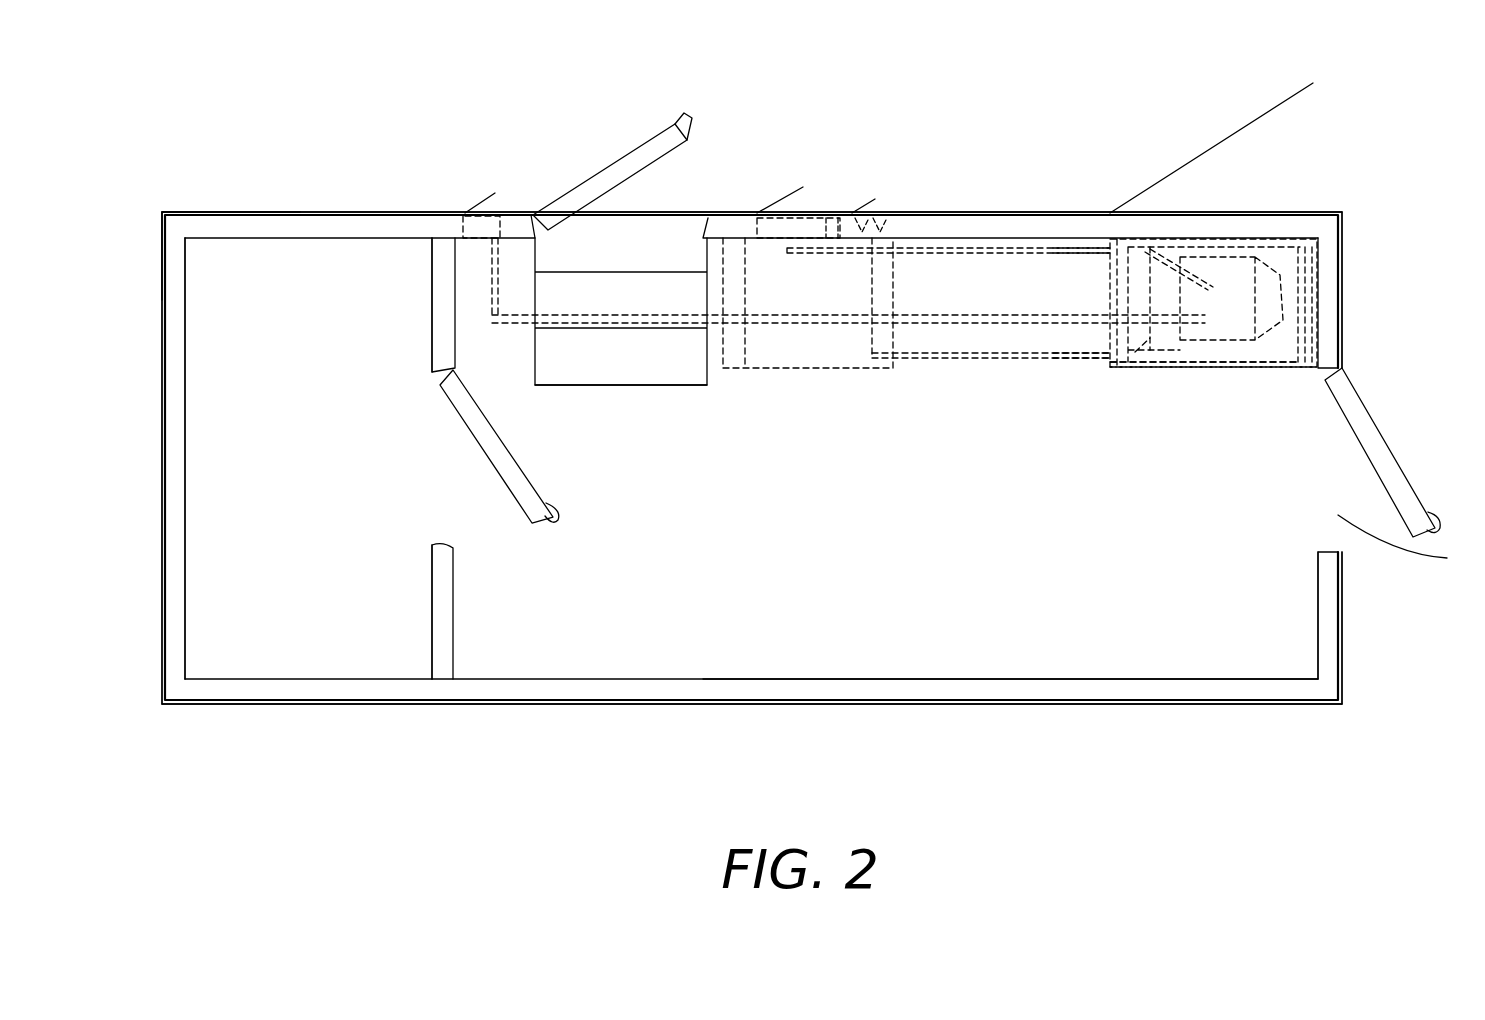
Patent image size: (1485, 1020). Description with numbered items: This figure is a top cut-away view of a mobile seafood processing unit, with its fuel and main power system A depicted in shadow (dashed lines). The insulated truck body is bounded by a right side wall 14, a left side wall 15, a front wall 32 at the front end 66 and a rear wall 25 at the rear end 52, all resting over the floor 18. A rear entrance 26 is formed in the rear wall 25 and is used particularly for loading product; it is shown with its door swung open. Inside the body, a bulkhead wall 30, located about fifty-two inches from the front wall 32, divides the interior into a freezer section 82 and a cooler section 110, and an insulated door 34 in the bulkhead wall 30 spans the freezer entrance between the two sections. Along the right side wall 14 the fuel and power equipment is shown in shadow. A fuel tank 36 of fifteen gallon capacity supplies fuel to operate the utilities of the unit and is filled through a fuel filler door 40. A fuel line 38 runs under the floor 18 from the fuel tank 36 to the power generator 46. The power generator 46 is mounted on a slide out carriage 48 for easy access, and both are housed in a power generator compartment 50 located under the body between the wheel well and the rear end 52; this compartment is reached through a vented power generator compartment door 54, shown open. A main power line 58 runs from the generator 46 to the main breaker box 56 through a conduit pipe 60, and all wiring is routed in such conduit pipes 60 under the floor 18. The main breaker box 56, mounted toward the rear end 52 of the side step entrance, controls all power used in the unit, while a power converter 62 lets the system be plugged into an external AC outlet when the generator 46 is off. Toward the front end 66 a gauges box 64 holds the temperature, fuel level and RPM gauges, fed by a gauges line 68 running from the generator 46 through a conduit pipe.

The right side wall 14 is at (1036, 226).
The left side wall 15 is at (847, 690).
The floor 18 is at (624, 568).
The rear wall 25 is at (1332, 273).
The rear entrance 26 is at (1407, 544).
The bulkhead wall 30 is at (443, 300).
The front wall 32 is at (170, 582).
The insulated door 34 is at (515, 470).
The fuel tank 36 is at (797, 335).
The fuel line 38 is at (987, 360).
The fuel filler door 40 is at (870, 224).
The power generator 46 is at (1195, 307).
The slide out carriage 48 is at (1280, 358).
The power generator compartment 50 is at (1185, 365).
The rear end 52 is at (1345, 228).
The power generator compartment door 54 is at (1227, 135).
The main breaker box 56 is at (795, 228).
The main power line 58 is at (928, 247).
The conduit pipe 60 is at (1083, 352).
The power converter 62 is at (832, 222).
The gauges box 64 is at (490, 226).
The front end 66 is at (160, 268).
The gauges line 68 is at (1015, 325).
The freezer section 82 is at (284, 494).
The cooler section 110 is at (868, 553).
The fuel and main power system A is at (792, 298).